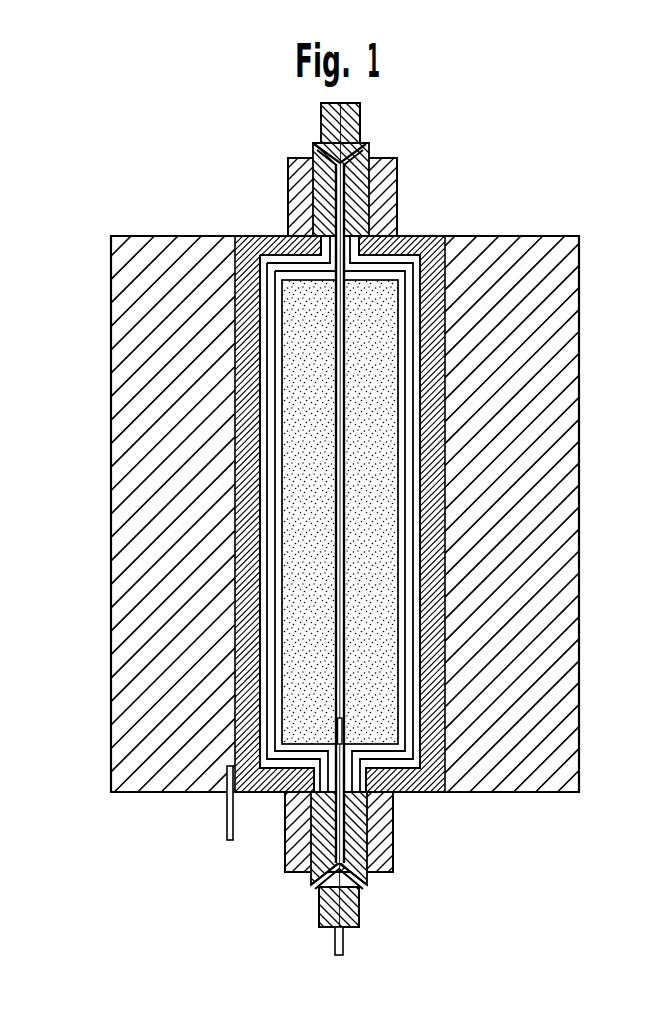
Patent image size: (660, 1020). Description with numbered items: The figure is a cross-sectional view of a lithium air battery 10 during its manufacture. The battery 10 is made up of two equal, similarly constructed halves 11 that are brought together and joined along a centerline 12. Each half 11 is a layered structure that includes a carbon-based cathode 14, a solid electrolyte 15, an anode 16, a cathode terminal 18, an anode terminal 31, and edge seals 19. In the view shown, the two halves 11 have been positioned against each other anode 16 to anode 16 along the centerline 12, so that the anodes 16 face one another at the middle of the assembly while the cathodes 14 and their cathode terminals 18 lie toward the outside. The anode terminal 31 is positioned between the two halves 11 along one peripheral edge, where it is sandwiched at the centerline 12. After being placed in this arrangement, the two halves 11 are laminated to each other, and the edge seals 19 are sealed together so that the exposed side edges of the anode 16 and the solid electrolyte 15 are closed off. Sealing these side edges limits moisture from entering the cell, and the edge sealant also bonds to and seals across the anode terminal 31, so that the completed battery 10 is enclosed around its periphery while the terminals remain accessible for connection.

The lithium air battery 10 is at (543, 126).
The half 11 is at (160, 188).
The centerline 12 is at (342, 387).
The carbon-based cathode 14 is at (160, 367).
The solid electrolyte 15 is at (300, 270).
The anode 16 is at (335, 475).
The cathode terminal 18 is at (228, 828).
The edge seals 19 is at (372, 152).
The anode terminal 31 is at (337, 736).